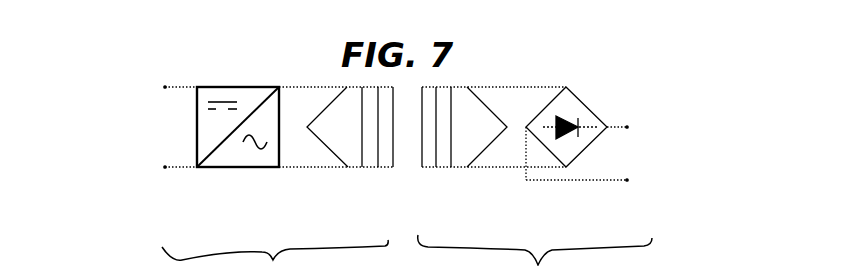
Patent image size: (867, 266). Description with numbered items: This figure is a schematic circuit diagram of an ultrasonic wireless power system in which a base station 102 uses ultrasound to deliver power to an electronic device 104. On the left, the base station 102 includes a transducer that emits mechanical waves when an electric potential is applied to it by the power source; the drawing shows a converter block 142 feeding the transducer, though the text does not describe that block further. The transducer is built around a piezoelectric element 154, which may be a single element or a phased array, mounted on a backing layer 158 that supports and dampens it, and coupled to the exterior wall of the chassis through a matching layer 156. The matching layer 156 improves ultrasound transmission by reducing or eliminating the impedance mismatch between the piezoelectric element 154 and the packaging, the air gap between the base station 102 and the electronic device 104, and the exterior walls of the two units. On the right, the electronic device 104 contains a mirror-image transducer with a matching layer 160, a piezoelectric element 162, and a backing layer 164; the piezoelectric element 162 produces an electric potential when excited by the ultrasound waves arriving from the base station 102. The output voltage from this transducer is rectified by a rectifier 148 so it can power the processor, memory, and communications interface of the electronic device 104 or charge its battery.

The base station 102 is at (128, 85).
The electronic device 104 is at (672, 73).
The inverter (DC to AC converter) 142 is at (243, 97).
The rectifier 148 is at (582, 108).
The piezoelectric element 154 is at (370, 152).
The matching layer 156 is at (387, 157).
The backing layer 158 is at (338, 140).
The matching layer 160 is at (430, 160).
The piezoelectric element 162 is at (443, 155).
The backing layer 164 is at (478, 133).